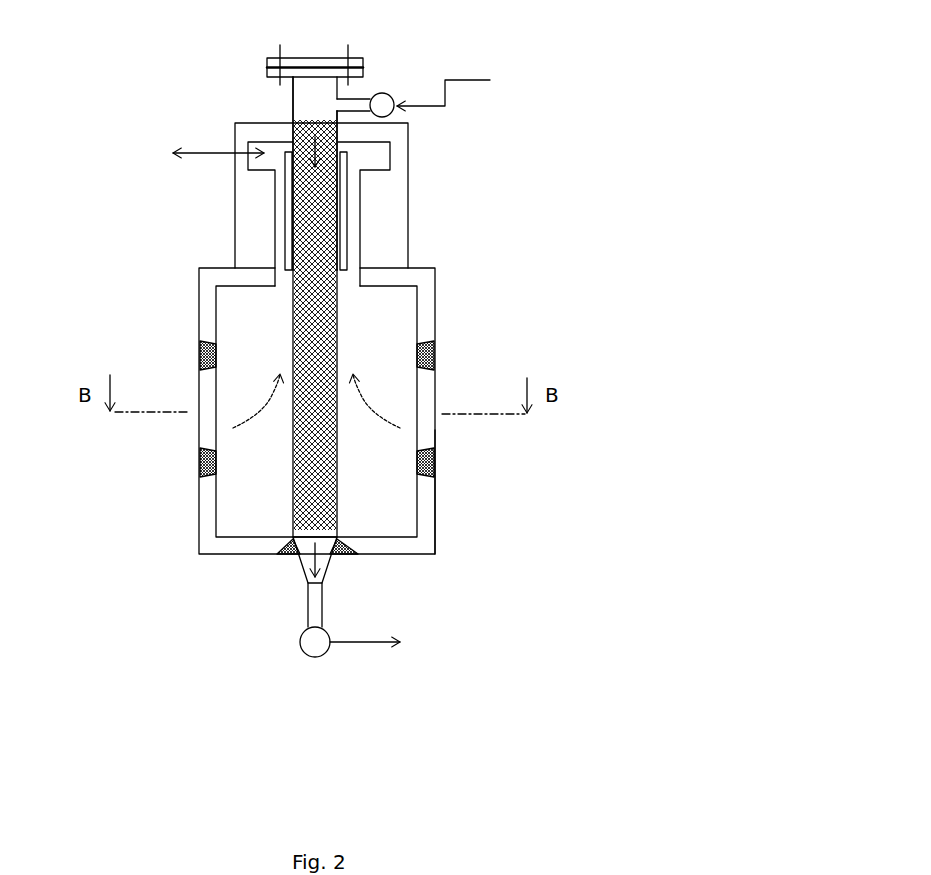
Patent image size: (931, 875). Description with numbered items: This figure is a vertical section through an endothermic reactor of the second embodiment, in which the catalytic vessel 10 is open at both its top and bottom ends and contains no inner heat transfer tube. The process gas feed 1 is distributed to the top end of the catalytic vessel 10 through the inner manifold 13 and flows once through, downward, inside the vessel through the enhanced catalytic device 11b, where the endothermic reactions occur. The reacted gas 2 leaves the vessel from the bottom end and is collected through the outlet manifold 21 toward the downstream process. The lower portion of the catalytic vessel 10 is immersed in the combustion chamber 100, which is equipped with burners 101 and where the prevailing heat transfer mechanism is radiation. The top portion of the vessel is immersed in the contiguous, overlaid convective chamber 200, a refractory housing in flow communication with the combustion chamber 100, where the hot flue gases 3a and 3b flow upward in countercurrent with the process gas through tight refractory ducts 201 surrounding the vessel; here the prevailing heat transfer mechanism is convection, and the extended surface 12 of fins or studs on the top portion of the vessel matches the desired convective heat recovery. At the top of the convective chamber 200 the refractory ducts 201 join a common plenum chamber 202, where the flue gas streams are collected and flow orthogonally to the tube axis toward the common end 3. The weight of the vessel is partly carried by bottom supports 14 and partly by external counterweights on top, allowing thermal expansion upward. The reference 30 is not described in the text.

The process gas feed 1 is at (458, 87).
The reacted gas 2 is at (378, 647).
The common end 3 is at (199, 153).
The hot flue gas 3a is at (256, 401).
The hot flue gas 3b is at (378, 401).
The catalytic vessel 10 is at (344, 132).
The enhanced catalytic device 11b is at (316, 330).
The extended surface 12 is at (350, 218).
The inner manifold 13 is at (393, 91).
The bottom support 14 is at (352, 545).
The outlet manifold 21 is at (297, 641).
The lower housing 30 is at (198, 310).
The combustion chamber 100 is at (436, 512).
The burner 101 is at (197, 467).
The convective chamber 200 is at (233, 212).
The refractory duct 201 is at (275, 252).
The common plenum chamber 202 is at (255, 149).